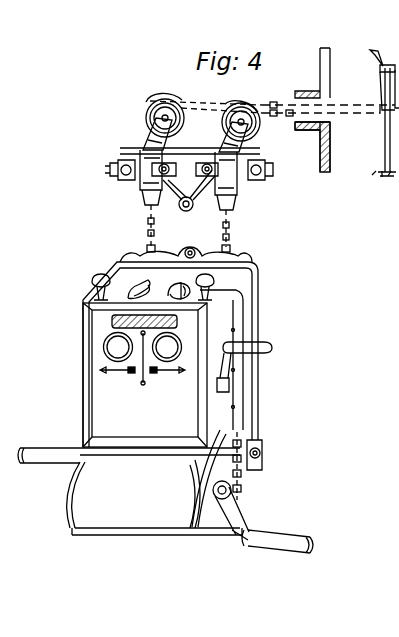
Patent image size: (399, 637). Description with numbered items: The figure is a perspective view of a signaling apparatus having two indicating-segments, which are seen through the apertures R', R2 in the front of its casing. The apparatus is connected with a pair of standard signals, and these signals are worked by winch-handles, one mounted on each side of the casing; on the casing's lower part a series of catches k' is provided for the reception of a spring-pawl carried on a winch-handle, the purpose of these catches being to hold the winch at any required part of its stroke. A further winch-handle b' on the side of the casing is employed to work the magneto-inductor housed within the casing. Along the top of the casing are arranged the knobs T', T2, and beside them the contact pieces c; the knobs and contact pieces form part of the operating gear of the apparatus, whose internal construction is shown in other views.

The knob T' is at (96, 283).
The knob T2 is at (210, 287).
The contact spring c is at (153, 290).
The aperture R' is at (145, 375).
The aperture R2 is at (167, 347).
The winch-handle b' is at (249, 366).
The catch k' is at (237, 486).